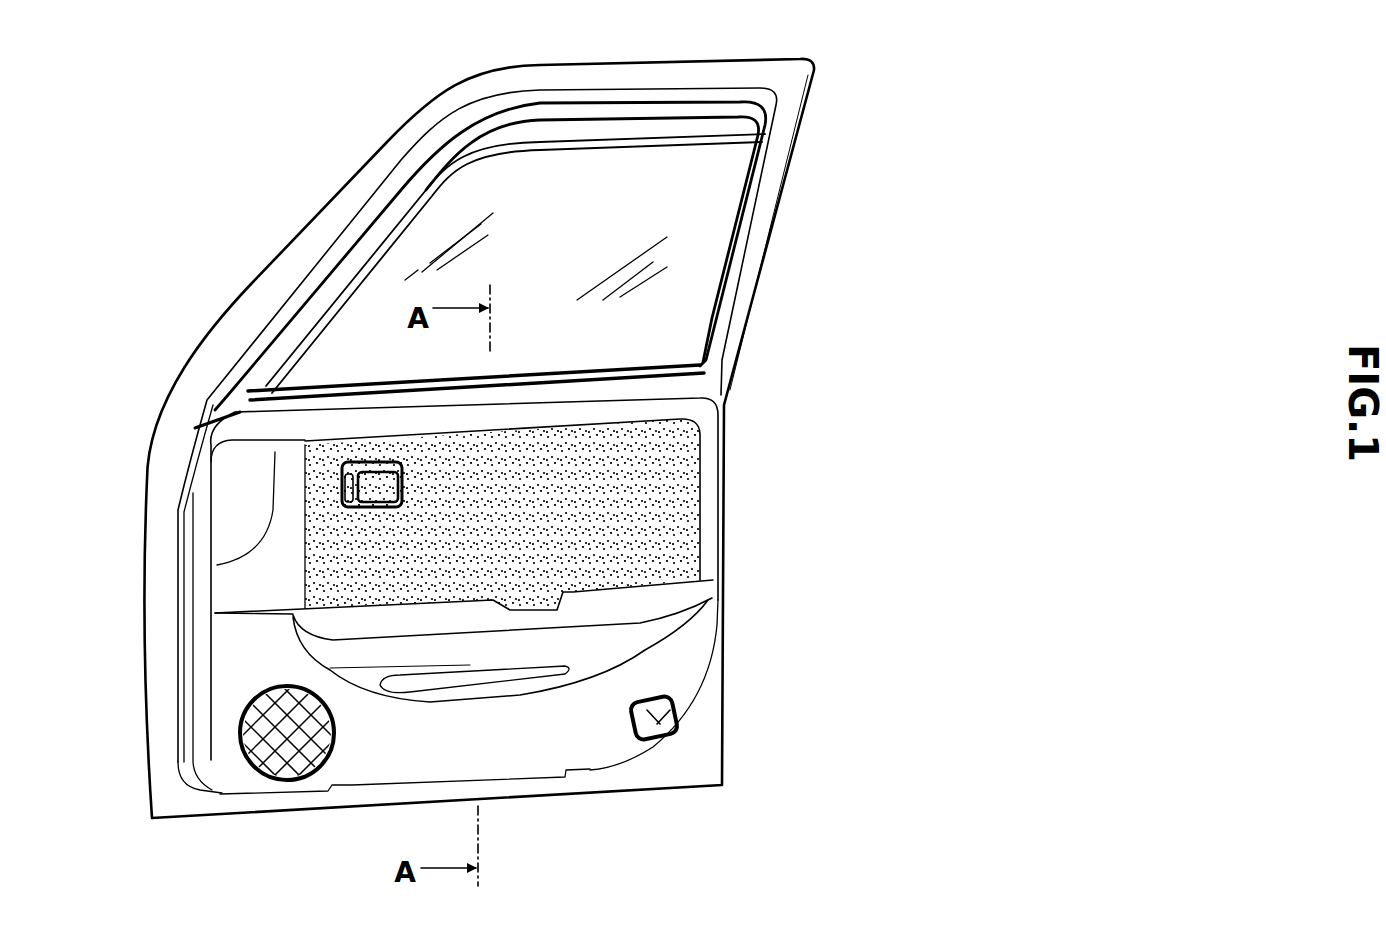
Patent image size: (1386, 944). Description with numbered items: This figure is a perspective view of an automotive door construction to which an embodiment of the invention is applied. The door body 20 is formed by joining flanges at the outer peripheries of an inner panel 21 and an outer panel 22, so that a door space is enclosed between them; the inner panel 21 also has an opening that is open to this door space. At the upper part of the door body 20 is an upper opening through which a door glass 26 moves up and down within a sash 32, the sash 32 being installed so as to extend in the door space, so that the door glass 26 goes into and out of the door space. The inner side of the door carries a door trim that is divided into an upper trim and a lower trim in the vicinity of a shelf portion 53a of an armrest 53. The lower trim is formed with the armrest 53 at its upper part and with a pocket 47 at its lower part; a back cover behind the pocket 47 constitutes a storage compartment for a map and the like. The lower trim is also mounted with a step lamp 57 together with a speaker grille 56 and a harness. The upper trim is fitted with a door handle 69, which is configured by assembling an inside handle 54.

The door body 20 is at (140, 431).
The inner panel 21 is at (140, 612).
The outer panel 22 is at (157, 685).
The door glass 26 is at (660, 306).
The sash 32 is at (760, 194).
The pocket 47 is at (545, 733).
The armrest 53 is at (637, 630).
The shelf portion 53a is at (647, 596).
The inside handle 54 is at (349, 462).
The speaker grille 56 is at (284, 780).
The step lamp 57 is at (660, 728).
The door handle 69 is at (395, 460).